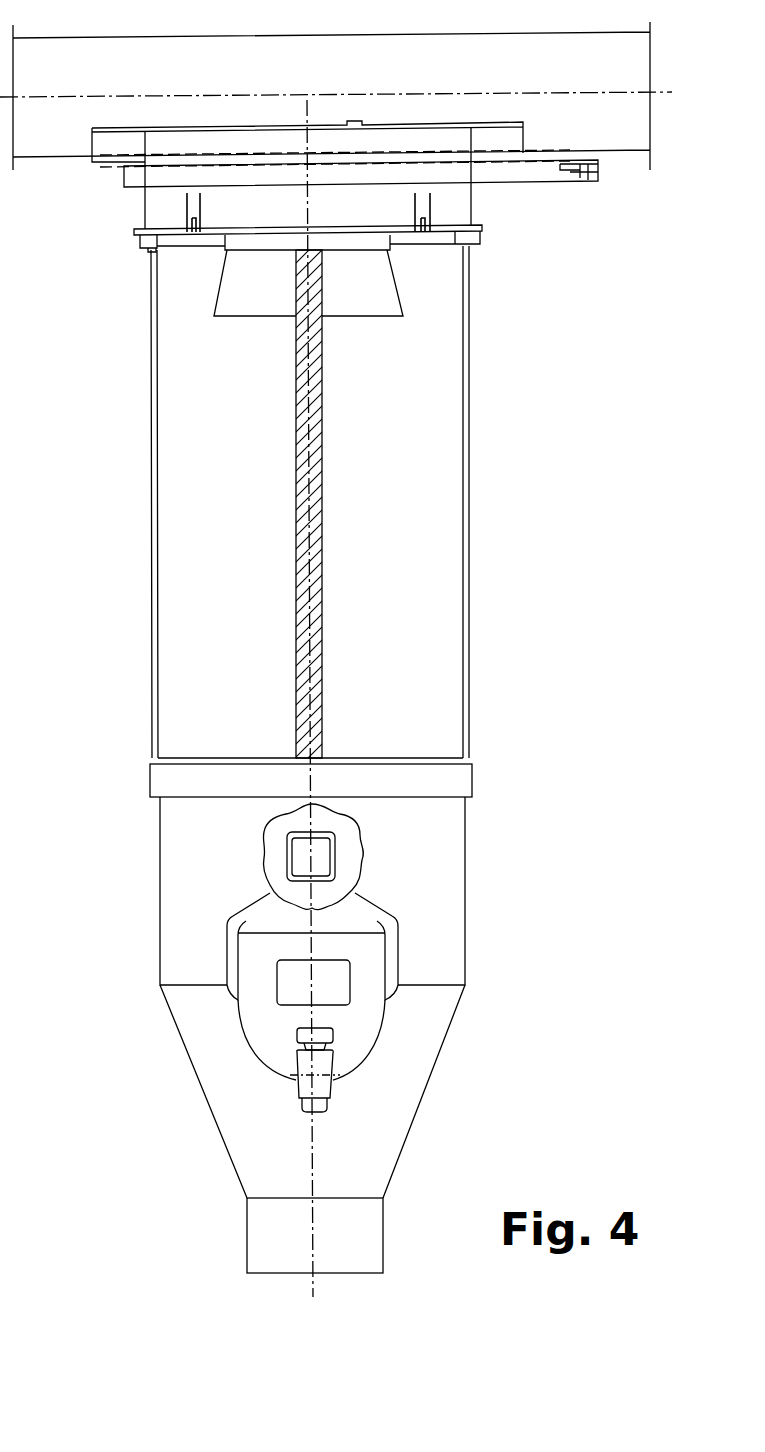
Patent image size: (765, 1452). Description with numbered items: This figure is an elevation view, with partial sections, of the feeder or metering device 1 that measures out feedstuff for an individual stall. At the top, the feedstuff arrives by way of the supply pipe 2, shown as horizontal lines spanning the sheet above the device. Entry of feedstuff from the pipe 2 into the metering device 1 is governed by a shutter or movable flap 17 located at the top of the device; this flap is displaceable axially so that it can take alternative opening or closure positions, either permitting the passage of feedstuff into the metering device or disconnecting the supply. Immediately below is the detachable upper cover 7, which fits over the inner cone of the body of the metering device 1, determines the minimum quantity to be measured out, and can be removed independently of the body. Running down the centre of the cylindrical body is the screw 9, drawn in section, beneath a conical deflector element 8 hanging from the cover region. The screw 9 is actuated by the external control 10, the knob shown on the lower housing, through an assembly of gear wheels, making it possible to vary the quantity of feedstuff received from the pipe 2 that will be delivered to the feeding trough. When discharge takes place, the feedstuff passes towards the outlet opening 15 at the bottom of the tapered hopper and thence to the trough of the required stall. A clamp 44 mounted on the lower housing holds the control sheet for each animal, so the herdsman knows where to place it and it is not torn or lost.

The feeder 1 is at (473, 660).
The pipe 2 is at (468, 54).
The detachable upper cover 7 is at (143, 209).
The deflector 8 is at (400, 302).
The screw 9 is at (318, 513).
The external control 10 is at (345, 852).
The outlet opening 15 is at (247, 1218).
The shutter or movable flap 17 is at (550, 177).
The clamp 44 is at (322, 1064).